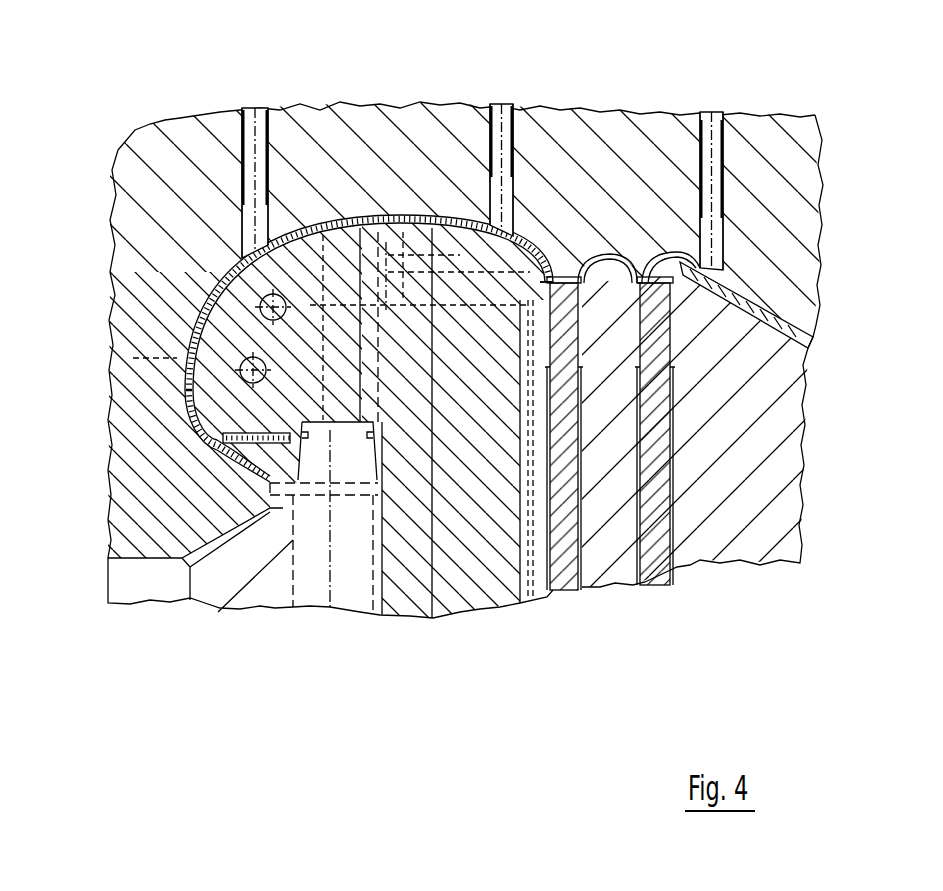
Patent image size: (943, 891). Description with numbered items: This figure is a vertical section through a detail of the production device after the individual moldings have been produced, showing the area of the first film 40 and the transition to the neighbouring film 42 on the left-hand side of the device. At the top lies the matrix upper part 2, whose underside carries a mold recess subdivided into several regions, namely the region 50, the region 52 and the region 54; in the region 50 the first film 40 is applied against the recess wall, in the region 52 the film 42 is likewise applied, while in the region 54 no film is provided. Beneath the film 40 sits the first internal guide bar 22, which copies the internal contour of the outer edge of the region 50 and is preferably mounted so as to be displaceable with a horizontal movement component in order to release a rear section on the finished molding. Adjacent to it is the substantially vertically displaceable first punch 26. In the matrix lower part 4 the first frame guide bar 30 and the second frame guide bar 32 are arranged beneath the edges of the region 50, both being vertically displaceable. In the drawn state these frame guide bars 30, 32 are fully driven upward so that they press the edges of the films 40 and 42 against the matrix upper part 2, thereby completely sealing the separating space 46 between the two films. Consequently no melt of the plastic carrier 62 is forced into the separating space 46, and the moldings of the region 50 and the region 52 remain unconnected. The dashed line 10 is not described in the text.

The matrix upper part 2 is at (148, 152).
The matrix lower part 4 is at (217, 600).
The hidden passage 10 is at (163, 380).
The first internal guide bar 22 is at (233, 312).
The first punch 26 is at (427, 547).
The first frame guide bar 30 is at (563, 547).
The second frame guide bar 32 is at (653, 543).
The first film 40 is at (232, 250).
The film 42 is at (762, 260).
The separating space 46 is at (605, 252).
The region 50 is at (347, 176).
The region 52 is at (799, 228).
The region 54 is at (260, 106).
The plastic carrier 62 is at (195, 438).